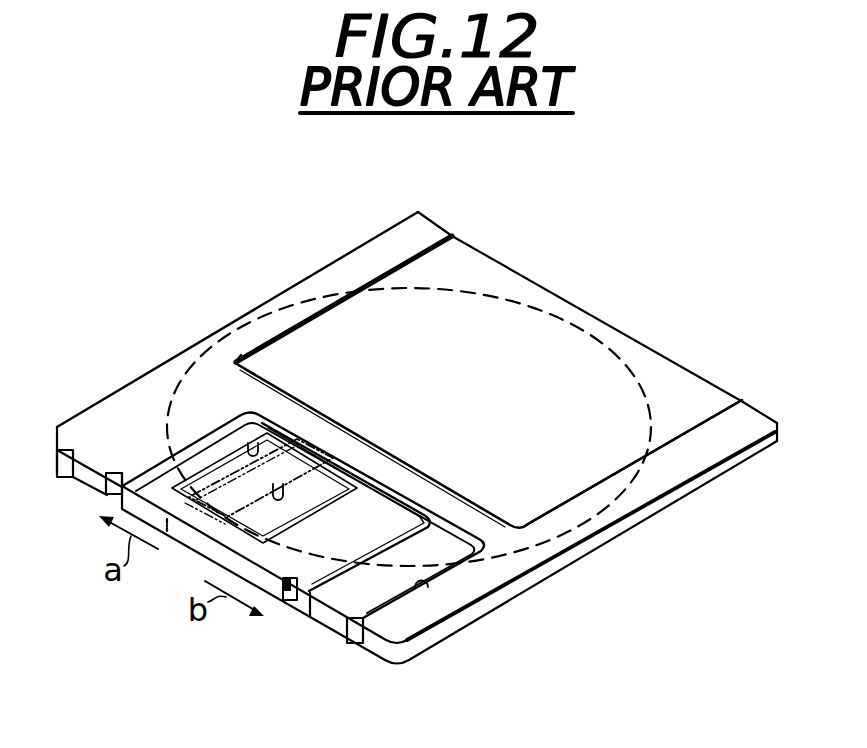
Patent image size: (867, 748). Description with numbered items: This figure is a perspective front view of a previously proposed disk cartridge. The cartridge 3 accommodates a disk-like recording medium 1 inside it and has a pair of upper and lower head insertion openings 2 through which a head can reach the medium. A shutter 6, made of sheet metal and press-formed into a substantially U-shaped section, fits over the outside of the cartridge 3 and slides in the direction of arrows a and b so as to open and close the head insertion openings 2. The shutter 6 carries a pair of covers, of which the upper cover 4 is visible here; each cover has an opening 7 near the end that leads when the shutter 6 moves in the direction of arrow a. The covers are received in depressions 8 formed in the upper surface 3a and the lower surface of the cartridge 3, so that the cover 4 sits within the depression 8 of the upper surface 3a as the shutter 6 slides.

The disk-like recording medium 1 is at (576, 323).
The head insertion openings 2 is at (333, 495).
The cartridge 3 is at (394, 242).
The upper surface 3a is at (709, 432).
The cover 4 is at (393, 520).
The shutter 6 is at (297, 616).
The openings 7 is at (279, 483).
The depressions 8 is at (426, 586).